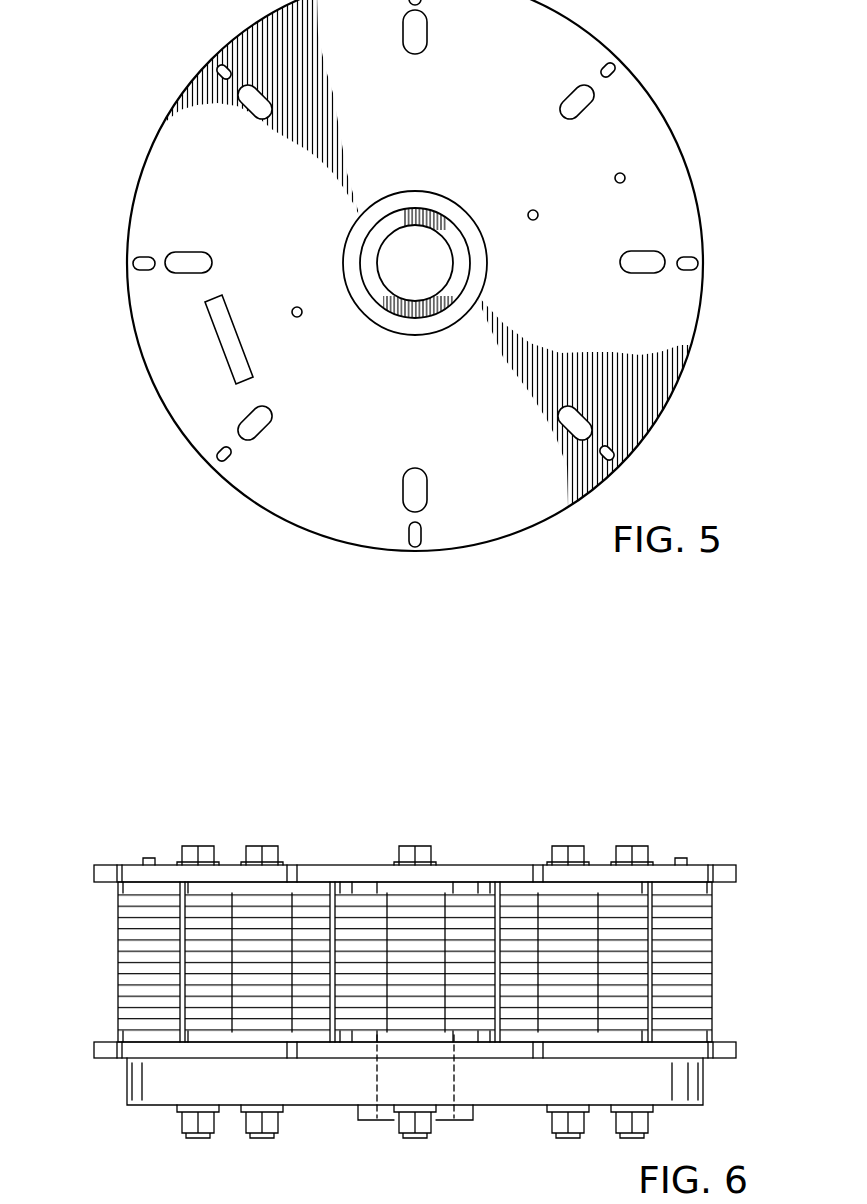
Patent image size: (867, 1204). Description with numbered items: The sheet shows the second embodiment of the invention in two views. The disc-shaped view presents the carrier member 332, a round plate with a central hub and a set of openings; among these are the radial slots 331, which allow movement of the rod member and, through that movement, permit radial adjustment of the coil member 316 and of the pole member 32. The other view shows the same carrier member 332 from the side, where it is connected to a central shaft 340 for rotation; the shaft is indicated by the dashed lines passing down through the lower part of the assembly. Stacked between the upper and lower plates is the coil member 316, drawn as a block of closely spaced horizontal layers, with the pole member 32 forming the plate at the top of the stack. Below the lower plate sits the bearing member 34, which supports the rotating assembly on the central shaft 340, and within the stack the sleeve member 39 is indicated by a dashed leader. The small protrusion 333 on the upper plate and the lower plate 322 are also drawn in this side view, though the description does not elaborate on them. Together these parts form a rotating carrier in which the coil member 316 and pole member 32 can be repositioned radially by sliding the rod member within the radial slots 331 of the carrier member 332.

In FIG. 6, the pole member 32 is at (95, 873).
In FIG. 5, the radial slots 331 is at (429, 33).
In FIG. 5, the carrier member 332 is at (654, 103).
In FIG. 6, the carrier member 332 is at (127, 1090).
In FIG. 6, the protrusion 333 is at (148, 857).
In FIG. 6, the coil member 316 is at (118, 955).
In FIG. 6, the lower end plate 322 is at (95, 1052).
In FIG. 6, the central shaft 340 is at (455, 1074).
In FIG. 6, the bearing member 34 is at (358, 1112).
In FIG. 6, the sleeve member 39 is at (445, 908).